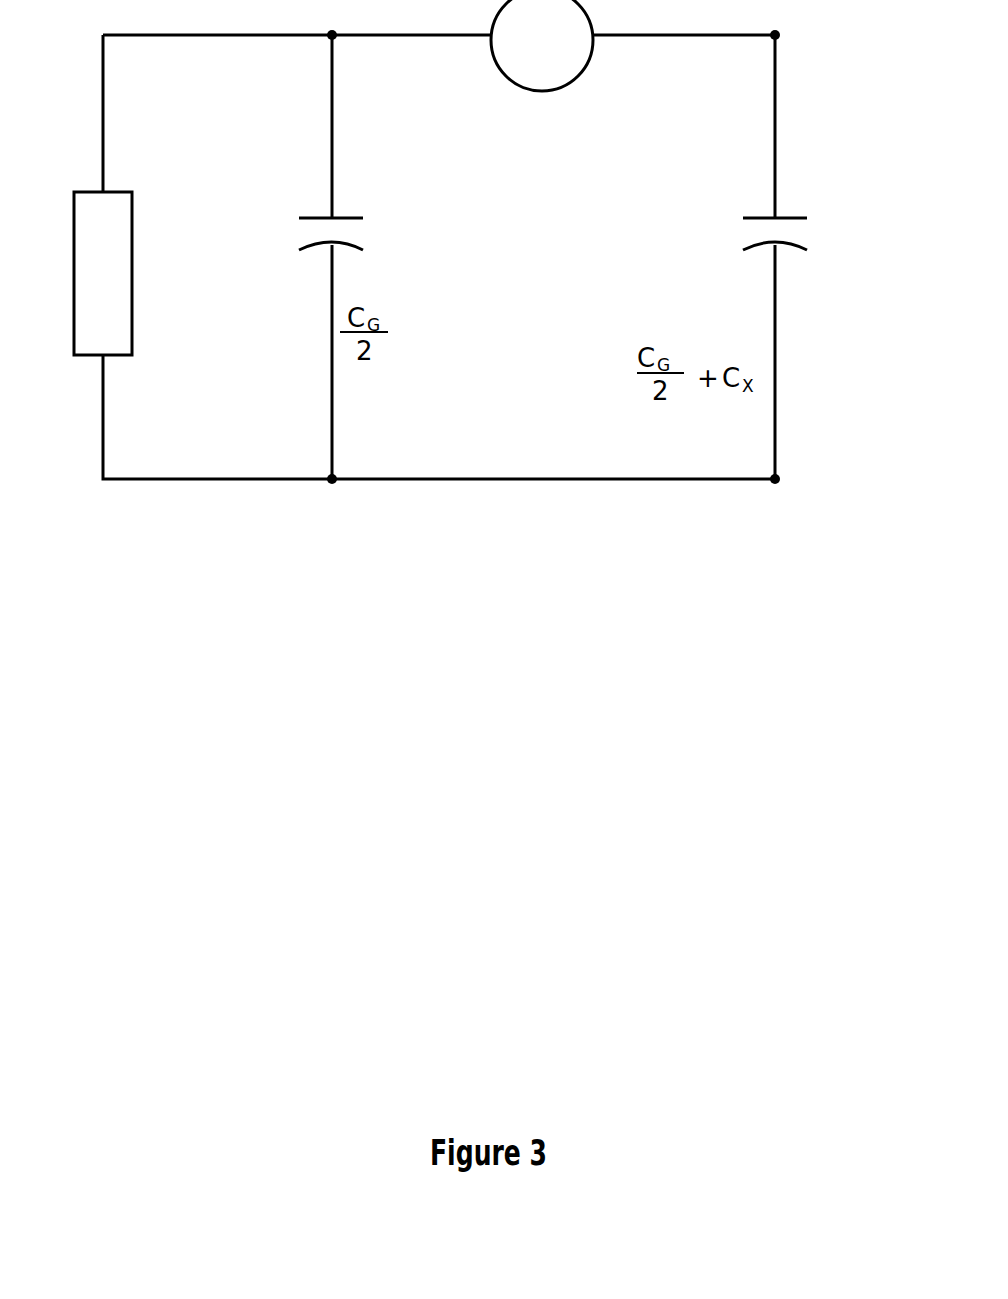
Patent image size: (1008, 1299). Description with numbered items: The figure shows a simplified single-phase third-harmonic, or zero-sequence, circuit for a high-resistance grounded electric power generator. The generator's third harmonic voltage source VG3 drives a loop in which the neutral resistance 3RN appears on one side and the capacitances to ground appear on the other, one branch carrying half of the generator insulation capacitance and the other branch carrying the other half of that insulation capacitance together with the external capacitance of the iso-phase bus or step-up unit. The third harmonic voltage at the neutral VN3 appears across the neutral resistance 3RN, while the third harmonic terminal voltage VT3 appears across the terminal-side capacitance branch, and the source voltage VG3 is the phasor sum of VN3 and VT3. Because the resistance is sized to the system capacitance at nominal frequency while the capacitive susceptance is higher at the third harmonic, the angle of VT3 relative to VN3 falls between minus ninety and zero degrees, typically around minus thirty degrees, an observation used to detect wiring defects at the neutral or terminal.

The neutral resistance 3RN is at (72, 273).
The third harmonic neutral voltage VN3 is at (219, 38).
The third harmonic generator voltage VG3 is at (738, 148).
The third harmonic terminal voltage VT3 is at (887, 38).